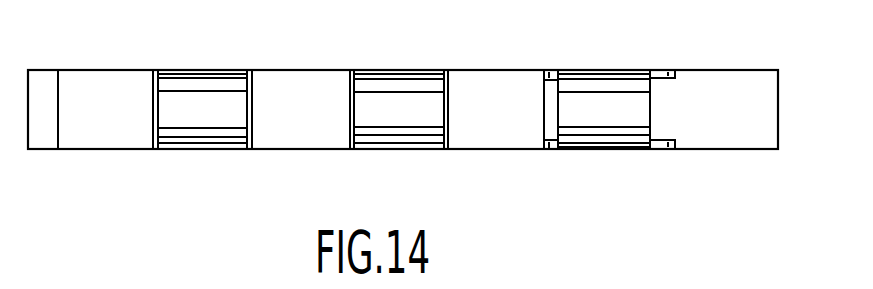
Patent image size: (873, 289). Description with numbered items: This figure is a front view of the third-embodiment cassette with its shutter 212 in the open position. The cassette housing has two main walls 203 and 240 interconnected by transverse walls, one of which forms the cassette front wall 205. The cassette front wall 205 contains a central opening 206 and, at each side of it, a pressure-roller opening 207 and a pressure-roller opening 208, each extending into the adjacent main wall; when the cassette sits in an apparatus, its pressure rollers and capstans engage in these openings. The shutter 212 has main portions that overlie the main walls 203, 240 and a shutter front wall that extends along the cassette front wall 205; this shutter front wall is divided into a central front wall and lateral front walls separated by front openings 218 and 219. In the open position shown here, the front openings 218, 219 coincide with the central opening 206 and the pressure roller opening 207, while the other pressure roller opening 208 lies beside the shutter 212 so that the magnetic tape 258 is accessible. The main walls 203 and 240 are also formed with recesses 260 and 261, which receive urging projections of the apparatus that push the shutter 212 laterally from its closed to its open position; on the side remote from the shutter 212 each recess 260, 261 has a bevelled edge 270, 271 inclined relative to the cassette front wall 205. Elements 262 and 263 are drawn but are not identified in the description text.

The main wall 203 is at (747, 72).
The cassette front wall 205 is at (765, 113).
The central opening 206 is at (402, 87).
The pressure-roller opening 207 is at (195, 83).
The pressure-roller opening 208 is at (619, 85).
The shutter 212 is at (502, 69).
The front opening 218 is at (148, 105).
The front opening 219 is at (348, 107).
The main wall 240 is at (747, 152).
The magnetic tape 258 is at (405, 113).
The recess 260 is at (655, 80).
The recess 261 is at (660, 152).
The upper left ring 262 is at (552, 80).
The lower left ring 263 is at (553, 150).
The bevelled edge 270 is at (672, 78).
The bevelled edge 271 is at (677, 145).